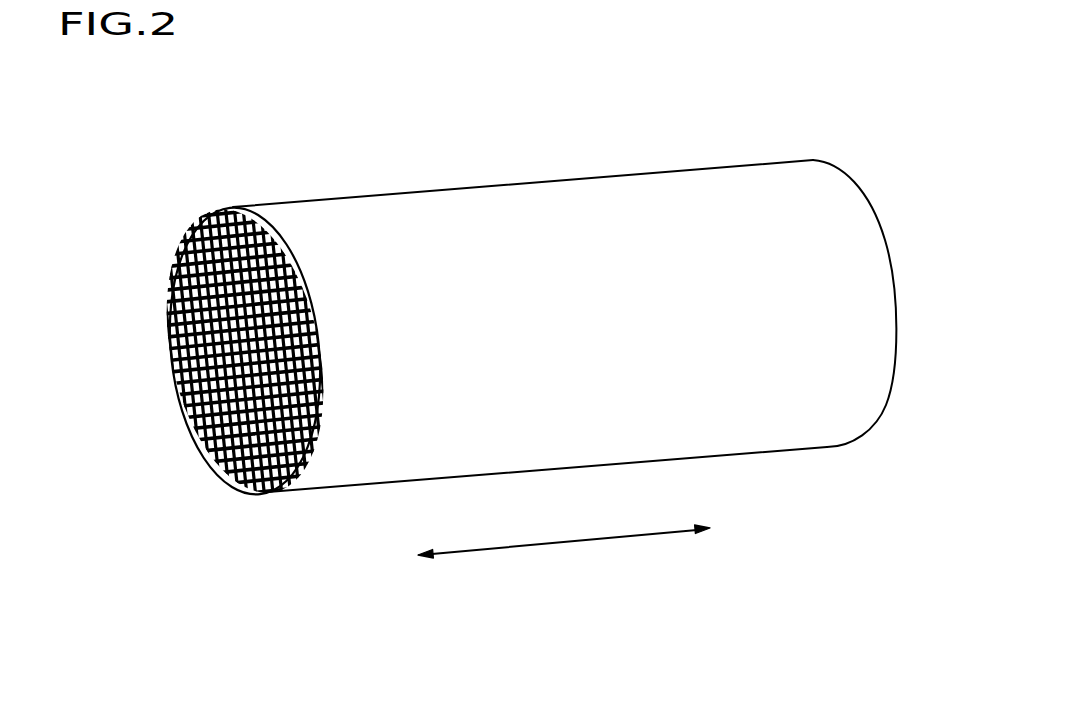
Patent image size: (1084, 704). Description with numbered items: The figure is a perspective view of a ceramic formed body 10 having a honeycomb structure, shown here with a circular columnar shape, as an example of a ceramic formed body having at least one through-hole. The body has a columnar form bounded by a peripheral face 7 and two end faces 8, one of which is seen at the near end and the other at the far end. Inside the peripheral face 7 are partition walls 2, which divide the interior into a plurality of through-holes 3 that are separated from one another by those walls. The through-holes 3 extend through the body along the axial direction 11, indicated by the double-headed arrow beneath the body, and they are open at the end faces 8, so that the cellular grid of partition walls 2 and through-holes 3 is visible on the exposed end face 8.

The honeycomb structure 10 is at (290, 173).
The peripheral face 7 is at (365, 217).
The end faces 8 is at (193, 299).
The partition walls 2 is at (290, 438).
The through-holes 3 is at (213, 473).
The axial direction 11 is at (488, 550).